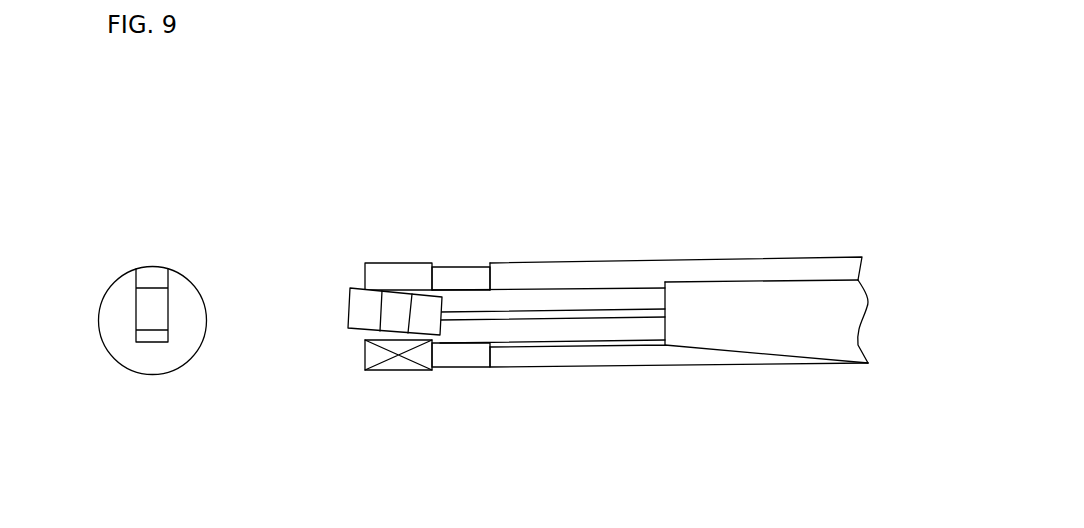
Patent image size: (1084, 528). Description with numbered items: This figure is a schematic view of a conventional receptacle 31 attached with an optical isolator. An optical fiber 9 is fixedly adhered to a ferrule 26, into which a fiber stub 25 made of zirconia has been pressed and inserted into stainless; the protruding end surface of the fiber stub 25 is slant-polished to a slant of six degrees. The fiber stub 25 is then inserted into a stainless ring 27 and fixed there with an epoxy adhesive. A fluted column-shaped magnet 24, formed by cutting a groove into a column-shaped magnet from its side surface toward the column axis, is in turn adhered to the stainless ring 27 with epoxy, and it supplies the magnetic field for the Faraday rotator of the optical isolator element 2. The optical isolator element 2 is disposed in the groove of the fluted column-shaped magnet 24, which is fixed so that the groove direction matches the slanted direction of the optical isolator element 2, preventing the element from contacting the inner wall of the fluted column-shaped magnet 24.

The optical isolator element 2 is at (345, 330).
The optical fiber 9 is at (593, 314).
The fluted column-shaped magnet 24 is at (420, 353).
The fiber stub 25 is at (525, 298).
The ferrule 26 is at (643, 273).
The stainless ring 27 is at (458, 277).
The receptacle attached with an optical isolator 31 is at (825, 140).